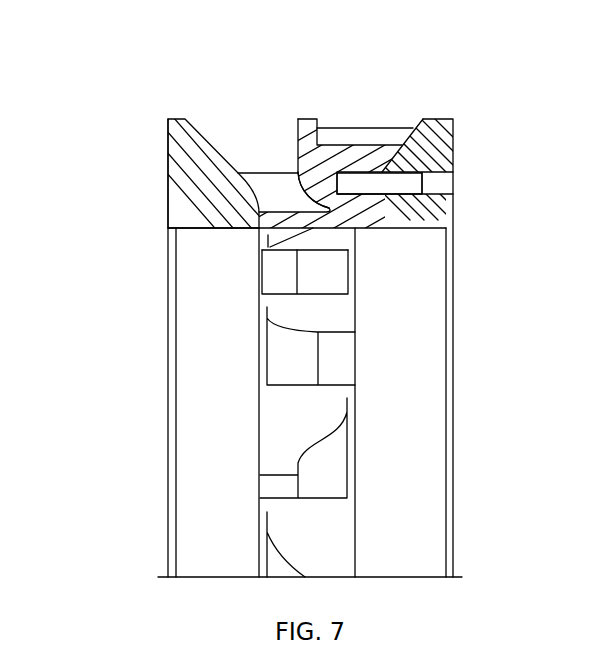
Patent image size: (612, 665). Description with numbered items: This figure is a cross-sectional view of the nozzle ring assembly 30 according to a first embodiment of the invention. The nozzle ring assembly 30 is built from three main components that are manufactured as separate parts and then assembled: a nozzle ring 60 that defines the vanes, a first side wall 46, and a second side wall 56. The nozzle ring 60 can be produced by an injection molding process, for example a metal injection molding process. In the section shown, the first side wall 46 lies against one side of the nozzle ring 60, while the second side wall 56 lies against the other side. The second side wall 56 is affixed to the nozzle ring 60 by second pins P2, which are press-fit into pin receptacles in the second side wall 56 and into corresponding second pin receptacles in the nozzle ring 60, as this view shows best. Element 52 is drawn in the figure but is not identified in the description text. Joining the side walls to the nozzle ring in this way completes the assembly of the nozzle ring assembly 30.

The nozzle ring assembly 30 is at (382, 93).
The first side wall 46 is at (178, 165).
The second ring 52 is at (358, 130).
The second side wall 56 is at (435, 147).
The nozzle ring 60 is at (291, 130).
The second pins P2 is at (389, 187).